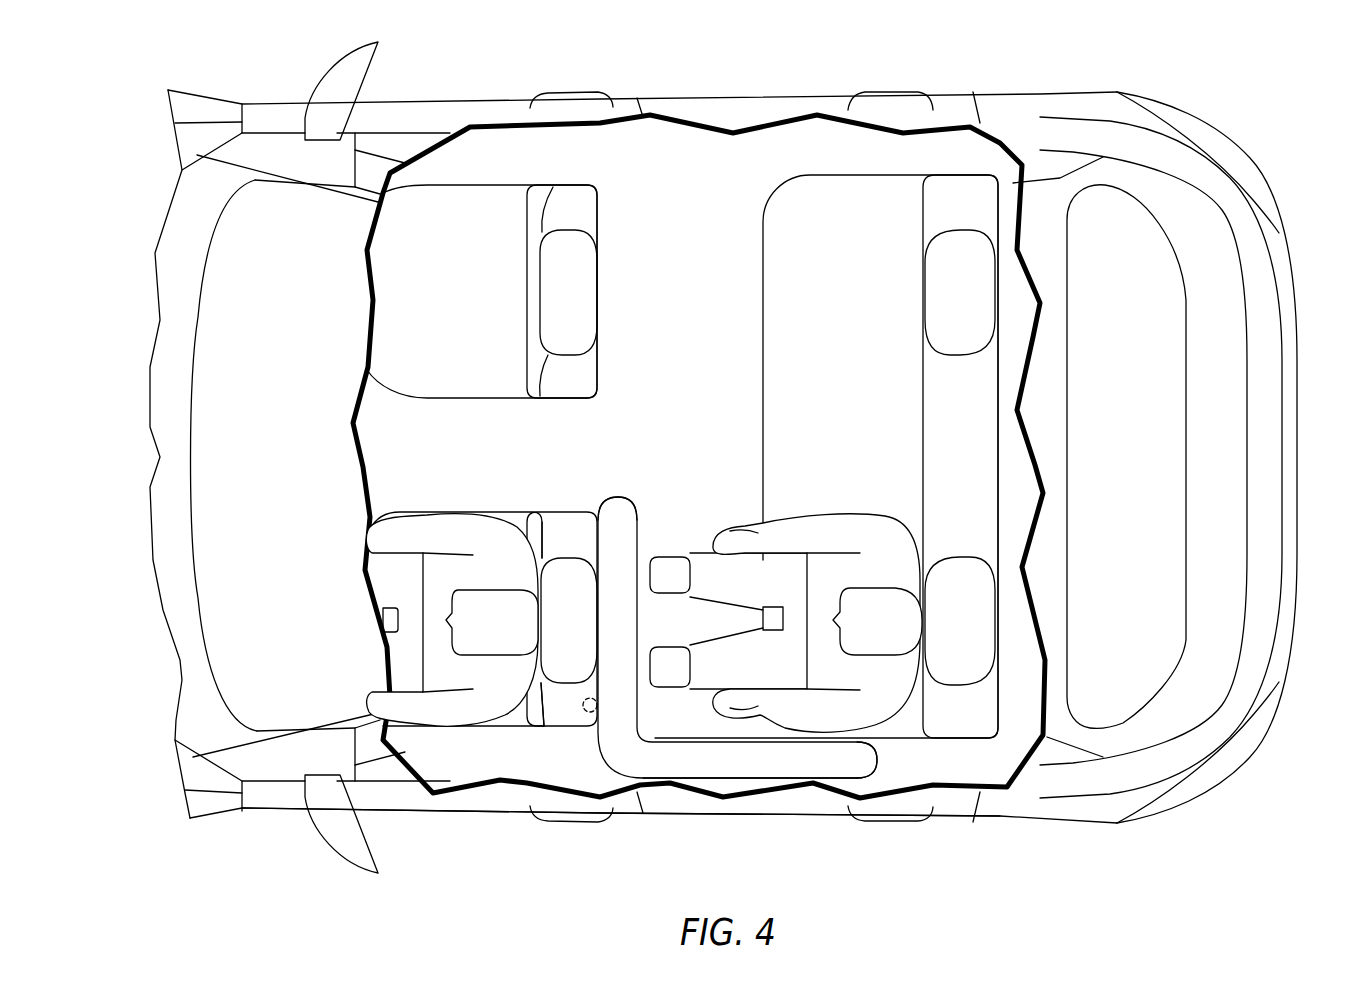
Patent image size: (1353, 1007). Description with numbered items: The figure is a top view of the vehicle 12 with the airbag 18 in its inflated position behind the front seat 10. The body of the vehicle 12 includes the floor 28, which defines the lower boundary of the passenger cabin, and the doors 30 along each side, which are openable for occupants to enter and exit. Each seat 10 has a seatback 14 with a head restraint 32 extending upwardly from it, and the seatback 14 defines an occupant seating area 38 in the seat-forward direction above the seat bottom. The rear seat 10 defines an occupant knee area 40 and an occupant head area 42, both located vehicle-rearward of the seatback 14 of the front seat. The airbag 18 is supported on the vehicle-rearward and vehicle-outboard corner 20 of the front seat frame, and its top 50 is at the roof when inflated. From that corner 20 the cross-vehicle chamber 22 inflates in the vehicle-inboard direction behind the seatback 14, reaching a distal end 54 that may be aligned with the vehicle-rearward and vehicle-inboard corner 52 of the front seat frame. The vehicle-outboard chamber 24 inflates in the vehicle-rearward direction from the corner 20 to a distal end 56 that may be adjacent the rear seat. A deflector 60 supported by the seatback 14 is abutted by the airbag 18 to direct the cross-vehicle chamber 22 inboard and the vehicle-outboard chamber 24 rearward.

The seat 10 is at (530, 175).
The vehicle 12 is at (1246, 82).
The seatback 14 is at (583, 210).
The airbag 18 is at (735, 790).
The vehicle-rearward and vehicle-outboard corner 20 is at (593, 736).
The cross-vehicle chamber 22 is at (620, 557).
The vehicle-outboard chamber 24 is at (780, 782).
The floor 28 is at (688, 167).
The doors 30 is at (480, 110).
The head restraint 32 is at (583, 284).
The occupant seating area 38 is at (496, 735).
The occupant knee area 40 is at (686, 688).
The occupant head area 42 is at (836, 588).
The top 50 is at (678, 760).
The vehicle-rearward and vehicle-inboard corner 52 is at (584, 503).
The distal end 54 is at (611, 512).
The distal end 56 is at (880, 755).
The deflector 60 is at (583, 702).